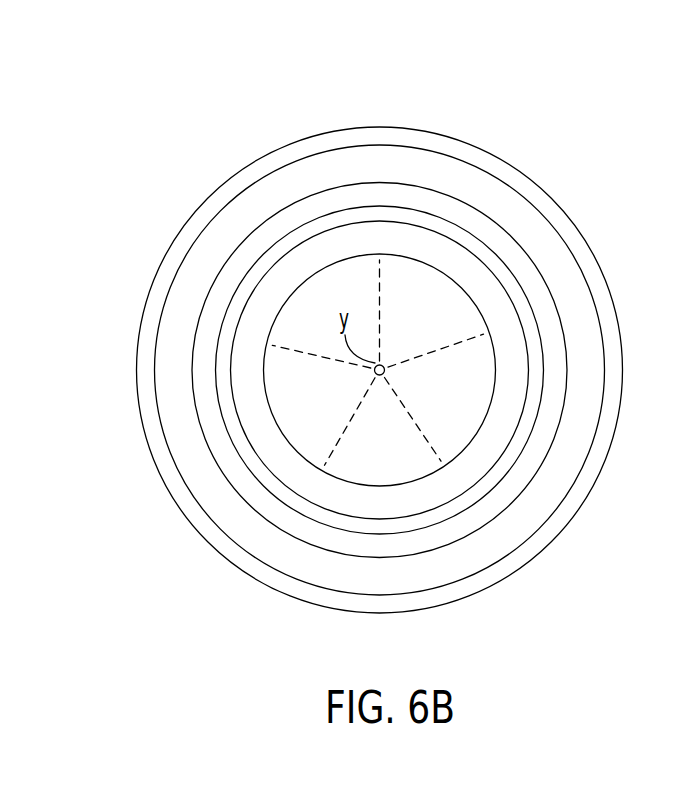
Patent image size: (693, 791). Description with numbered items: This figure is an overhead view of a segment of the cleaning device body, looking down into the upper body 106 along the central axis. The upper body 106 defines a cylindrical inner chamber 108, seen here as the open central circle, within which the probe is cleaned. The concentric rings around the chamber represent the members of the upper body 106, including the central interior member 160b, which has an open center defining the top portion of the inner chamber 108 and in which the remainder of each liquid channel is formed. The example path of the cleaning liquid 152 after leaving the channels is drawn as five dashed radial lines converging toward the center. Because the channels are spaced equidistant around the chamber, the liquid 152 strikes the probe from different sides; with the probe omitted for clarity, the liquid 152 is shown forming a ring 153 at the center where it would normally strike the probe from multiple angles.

The upper body 106 is at (197, 270).
The inner chamber 108 is at (378, 453).
The liquid 152 is at (303, 351).
The ring 153 is at (385, 361).
The central interior member 160b is at (293, 183).